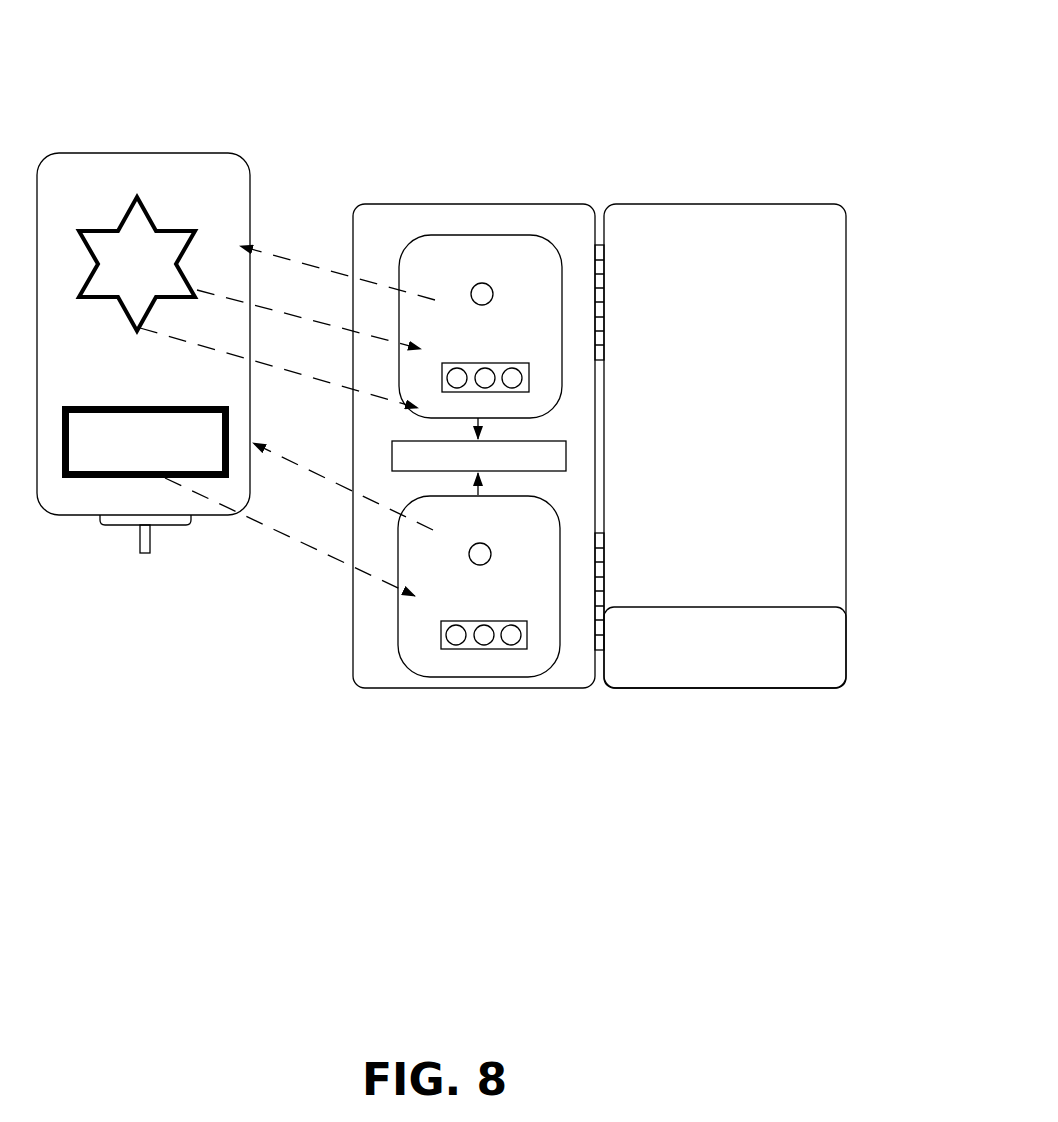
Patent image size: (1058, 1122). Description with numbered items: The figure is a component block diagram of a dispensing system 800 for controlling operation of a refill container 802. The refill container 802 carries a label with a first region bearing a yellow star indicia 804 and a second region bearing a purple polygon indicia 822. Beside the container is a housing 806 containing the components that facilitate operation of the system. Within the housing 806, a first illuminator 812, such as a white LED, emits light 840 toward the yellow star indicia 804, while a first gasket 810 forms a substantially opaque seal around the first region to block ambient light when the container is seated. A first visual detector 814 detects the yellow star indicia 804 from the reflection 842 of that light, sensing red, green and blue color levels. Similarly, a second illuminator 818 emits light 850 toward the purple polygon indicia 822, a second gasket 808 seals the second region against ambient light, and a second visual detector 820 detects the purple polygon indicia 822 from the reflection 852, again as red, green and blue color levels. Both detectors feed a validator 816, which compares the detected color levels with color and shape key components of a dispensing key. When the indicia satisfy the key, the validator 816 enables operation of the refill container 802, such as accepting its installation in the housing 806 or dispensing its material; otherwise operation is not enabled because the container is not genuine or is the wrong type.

The dispensing system 800 is at (634, 60).
The refill container 802 is at (185, 153).
The yellow star indicia 804 is at (153, 206).
The housing 806 is at (507, 204).
The second gasket 808 is at (450, 677).
The first gasket 810 is at (488, 235).
The first illuminator 812 is at (490, 284).
The first visual detector 814 is at (478, 363).
The validator 816 is at (566, 452).
The second illuminator 818 is at (490, 545).
The second visual detector 820 is at (476, 621).
The purple polygon indicia 822 is at (102, 399).
The emitted light 840 is at (270, 253).
The reflection 842 is at (325, 383).
The emitted light 850 is at (270, 451).
The reflection 852 is at (316, 550).